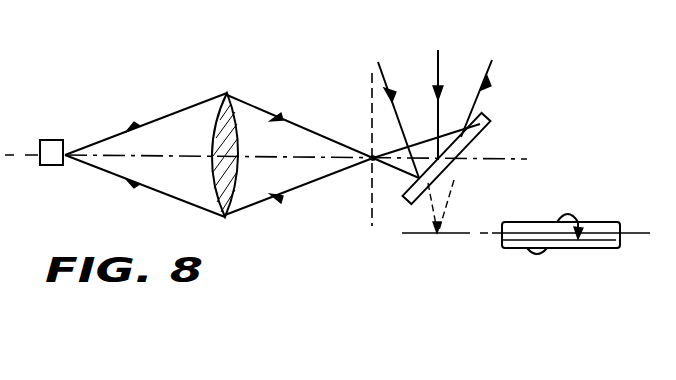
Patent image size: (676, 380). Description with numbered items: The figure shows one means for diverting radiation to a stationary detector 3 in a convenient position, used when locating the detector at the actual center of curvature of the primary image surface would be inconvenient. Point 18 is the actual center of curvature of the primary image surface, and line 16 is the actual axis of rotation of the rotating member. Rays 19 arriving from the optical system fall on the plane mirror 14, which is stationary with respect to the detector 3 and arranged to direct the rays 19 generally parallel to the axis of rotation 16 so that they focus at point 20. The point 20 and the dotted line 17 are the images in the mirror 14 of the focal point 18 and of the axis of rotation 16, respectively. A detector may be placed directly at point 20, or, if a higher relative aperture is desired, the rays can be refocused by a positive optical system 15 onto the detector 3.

The detector 3 is at (55, 151).
The plane mirror 14 is at (489, 118).
The positive optical system 15 is at (213, 140).
The axis of rotation 16 is at (452, 235).
The dotted line 17 is at (368, 108).
The center of curvature of the primary image surface 18 is at (433, 236).
The rays 19 is at (483, 72).
The focus point 20 is at (371, 161).